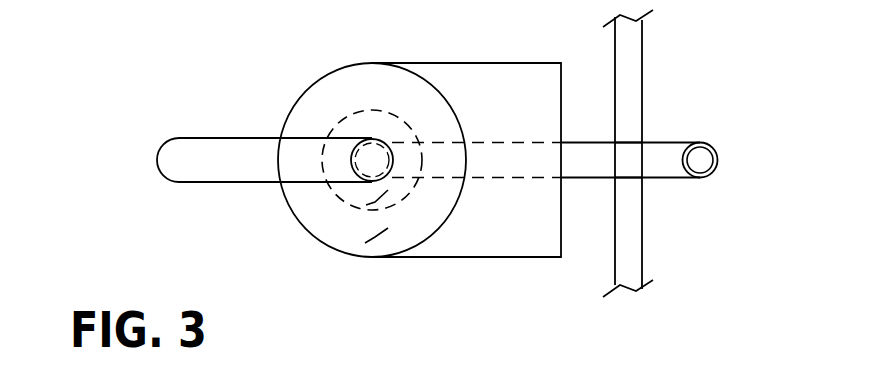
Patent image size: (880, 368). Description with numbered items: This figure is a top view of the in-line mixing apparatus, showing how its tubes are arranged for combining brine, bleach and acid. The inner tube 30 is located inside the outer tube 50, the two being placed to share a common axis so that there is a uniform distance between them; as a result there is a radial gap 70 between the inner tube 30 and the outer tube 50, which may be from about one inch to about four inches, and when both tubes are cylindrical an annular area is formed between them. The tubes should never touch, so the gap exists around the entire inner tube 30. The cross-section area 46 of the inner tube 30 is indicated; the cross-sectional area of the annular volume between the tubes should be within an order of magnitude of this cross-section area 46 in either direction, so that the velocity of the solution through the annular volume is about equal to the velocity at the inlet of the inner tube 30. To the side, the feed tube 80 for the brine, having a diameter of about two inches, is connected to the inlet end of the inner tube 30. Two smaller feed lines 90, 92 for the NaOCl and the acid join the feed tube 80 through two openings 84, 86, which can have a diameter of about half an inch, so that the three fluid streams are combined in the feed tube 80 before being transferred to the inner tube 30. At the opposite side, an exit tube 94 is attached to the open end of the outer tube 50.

The inner tube 30 is at (372, 108).
The outer tube 50 is at (328, 72).
The exit tube 94 is at (205, 138).
The feed tube 80 is at (718, 147).
The feed line 92 is at (642, 52).
The feed line 90 is at (640, 207).
The opening 86 is at (642, 137).
The opening 84 is at (615, 178).
The cross-section area 46 is at (369, 204).
The radial gap 70 is at (373, 237).